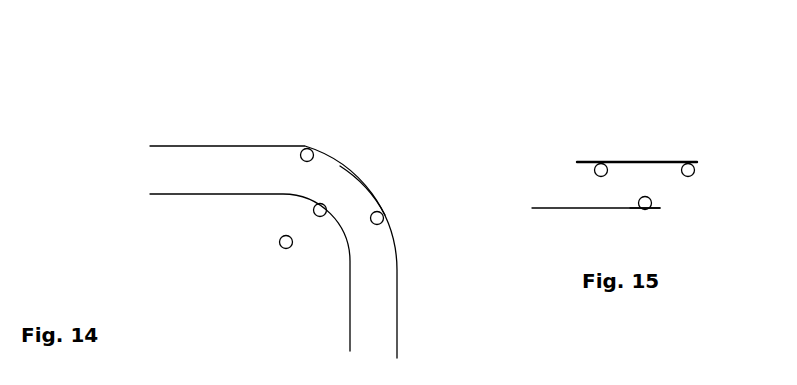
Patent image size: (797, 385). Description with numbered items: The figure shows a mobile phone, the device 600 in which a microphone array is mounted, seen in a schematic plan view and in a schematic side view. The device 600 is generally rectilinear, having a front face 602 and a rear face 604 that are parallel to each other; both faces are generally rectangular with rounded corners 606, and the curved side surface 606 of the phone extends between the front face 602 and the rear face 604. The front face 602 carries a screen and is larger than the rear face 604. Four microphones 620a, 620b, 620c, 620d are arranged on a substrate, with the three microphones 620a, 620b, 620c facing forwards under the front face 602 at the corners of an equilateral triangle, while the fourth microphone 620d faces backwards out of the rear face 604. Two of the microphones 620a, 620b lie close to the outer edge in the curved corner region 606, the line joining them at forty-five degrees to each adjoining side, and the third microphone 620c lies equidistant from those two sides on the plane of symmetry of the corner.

In FIG. 14, the device 600 is at (273, 197).
In FIG. 14, the front face 602 is at (278, 150).
In FIG. 15, the front face 602 is at (634, 160).
In FIG. 14, the rear face 604 is at (229, 194).
In FIG. 15, the rear face 604 is at (578, 207).
In FIG. 14, the rounded corner 606 is at (363, 183).
In FIG. 15, the rounded corner 606 is at (660, 208).
In FIG. 14, the microphone 620a is at (311, 151).
In FIG. 14, the microphone 620b is at (383, 216).
In FIG. 15, the microphone 620b is at (691, 165).
In FIG. 14, the microphone 620c is at (280, 238).
In FIG. 15, the microphone 620c is at (592, 170).
In FIG. 14, the microphone 620d is at (323, 214).
In FIG. 15, the microphone 620d is at (657, 209).